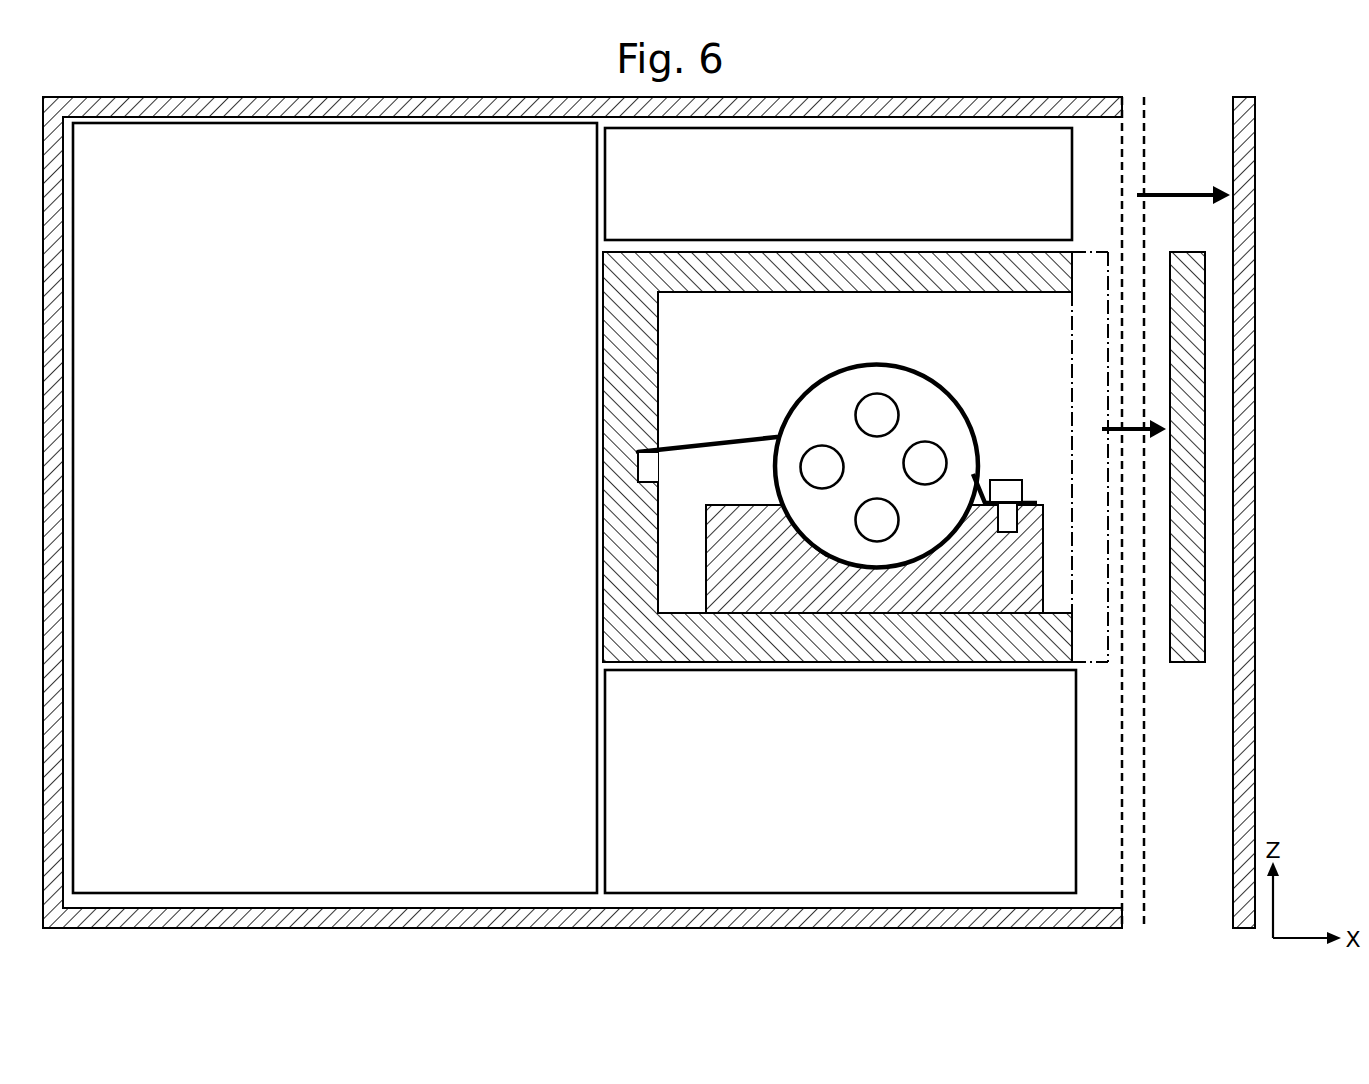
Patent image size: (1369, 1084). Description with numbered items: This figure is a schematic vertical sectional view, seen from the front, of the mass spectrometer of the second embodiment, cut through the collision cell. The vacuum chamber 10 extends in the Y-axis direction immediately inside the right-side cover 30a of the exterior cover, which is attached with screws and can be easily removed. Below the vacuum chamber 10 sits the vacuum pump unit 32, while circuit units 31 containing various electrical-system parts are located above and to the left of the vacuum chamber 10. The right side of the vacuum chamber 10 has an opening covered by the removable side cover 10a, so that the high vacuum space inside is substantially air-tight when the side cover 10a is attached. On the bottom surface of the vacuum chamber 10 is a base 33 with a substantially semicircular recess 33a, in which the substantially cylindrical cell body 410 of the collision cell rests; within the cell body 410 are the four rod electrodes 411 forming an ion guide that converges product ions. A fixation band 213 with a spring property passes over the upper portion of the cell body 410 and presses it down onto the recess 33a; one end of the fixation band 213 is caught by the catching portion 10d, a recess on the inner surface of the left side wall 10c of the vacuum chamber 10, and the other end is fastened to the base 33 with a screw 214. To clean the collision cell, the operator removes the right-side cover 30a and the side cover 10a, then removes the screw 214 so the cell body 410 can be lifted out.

The vacuum chamber 10 is at (833, 252).
The side cover 10a is at (1207, 298).
The left side wall 10c is at (658, 346).
The catching portion 10d is at (652, 468).
The right-side cover 30a is at (1257, 162).
The circuit units 31 is at (506, 132).
The vacuum pump unit 32 is at (903, 883).
The base 33 is at (723, 505).
The recess 33a is at (832, 536).
The fixation band 213 is at (717, 442).
The screw 214 is at (1018, 482).
The cell body 410 is at (978, 487).
The rod electrodes 411 is at (810, 445).